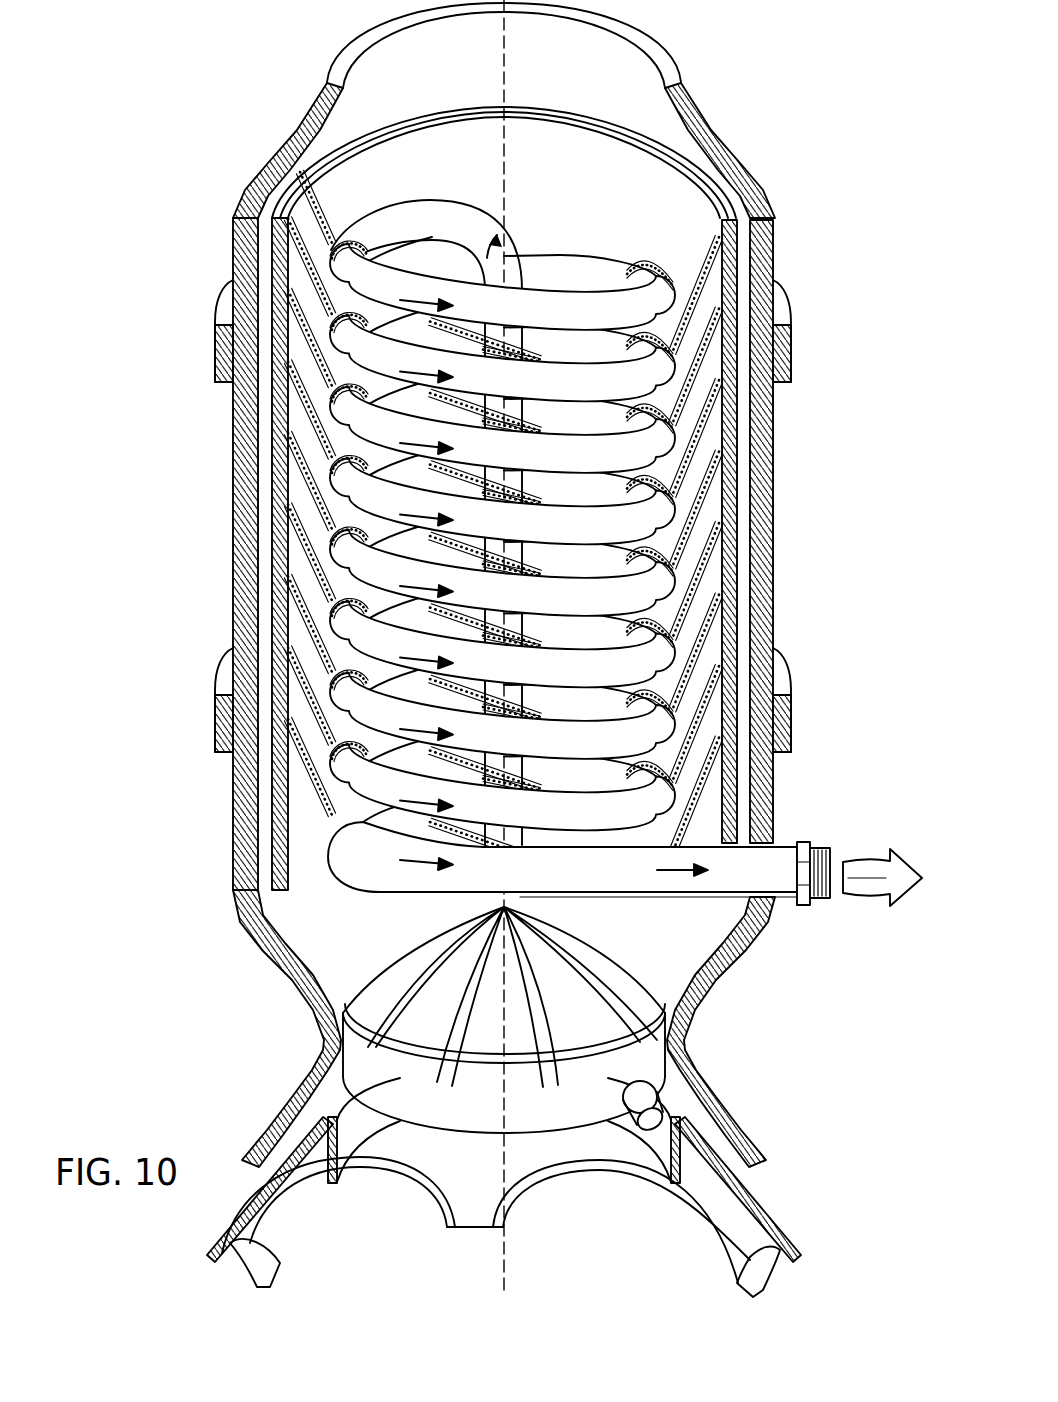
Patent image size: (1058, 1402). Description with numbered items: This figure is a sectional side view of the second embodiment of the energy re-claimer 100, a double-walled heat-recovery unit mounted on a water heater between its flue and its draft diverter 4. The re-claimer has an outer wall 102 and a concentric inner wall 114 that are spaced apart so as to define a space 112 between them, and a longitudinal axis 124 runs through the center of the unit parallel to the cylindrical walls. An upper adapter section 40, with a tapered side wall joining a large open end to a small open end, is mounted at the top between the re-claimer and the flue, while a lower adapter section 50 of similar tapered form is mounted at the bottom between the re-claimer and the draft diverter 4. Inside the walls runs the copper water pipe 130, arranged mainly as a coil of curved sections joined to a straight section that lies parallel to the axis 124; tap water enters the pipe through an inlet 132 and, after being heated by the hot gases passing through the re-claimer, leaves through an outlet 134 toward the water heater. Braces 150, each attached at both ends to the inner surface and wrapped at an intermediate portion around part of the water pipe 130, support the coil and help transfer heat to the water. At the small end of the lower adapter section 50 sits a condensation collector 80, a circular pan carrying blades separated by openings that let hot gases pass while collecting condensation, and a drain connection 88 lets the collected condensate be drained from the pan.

The energy re-claimer 100 is at (278, 66).
The upper adapter section 40 is at (717, 140).
The space 112 is at (743, 253).
The inner wall 114 is at (733, 292).
The outer wall 102 is at (763, 457).
The braces 150 is at (310, 290).
The water pipe 130 is at (520, 525).
The outlet 134 is at (825, 847).
The inlet 132 is at (825, 898).
The lower adapter section 50 is at (270, 958).
The condensation collector 80 is at (363, 1080).
The drain connection 88 is at (650, 1100).
The draft diverter 4 is at (777, 1200).
The longitudinal axis 124 is at (507, 1238).